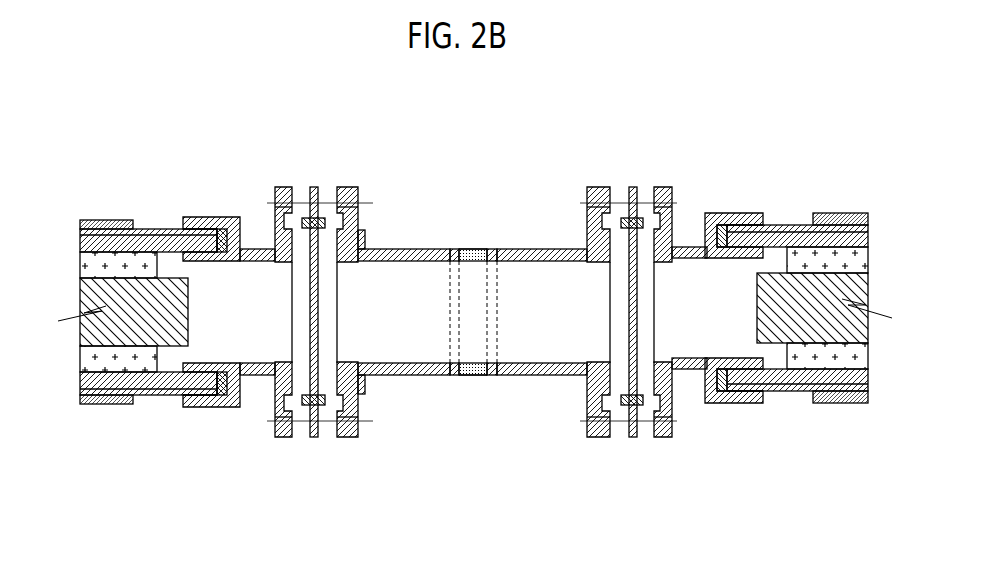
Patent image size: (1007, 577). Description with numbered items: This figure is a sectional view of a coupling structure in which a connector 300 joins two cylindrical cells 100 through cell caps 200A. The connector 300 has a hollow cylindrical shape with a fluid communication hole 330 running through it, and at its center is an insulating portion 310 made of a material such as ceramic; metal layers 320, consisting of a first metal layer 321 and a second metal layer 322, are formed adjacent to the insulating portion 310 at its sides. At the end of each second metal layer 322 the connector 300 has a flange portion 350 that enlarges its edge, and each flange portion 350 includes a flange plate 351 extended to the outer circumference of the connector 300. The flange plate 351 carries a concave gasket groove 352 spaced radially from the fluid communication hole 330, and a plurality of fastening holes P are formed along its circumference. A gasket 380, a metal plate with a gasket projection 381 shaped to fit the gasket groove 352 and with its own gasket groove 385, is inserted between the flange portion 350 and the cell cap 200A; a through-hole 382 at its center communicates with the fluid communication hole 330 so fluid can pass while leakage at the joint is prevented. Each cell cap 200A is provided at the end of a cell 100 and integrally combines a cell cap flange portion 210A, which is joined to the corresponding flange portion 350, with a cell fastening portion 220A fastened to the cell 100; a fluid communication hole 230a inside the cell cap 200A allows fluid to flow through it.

The cell 100 is at (104, 414).
The cell cap 200A is at (247, 214).
The cell fastening portion 220A is at (183, 217).
The fluid communication hole 230a is at (200, 408).
The through-hole 382 is at (258, 398).
The cell cap flange portion 210A is at (264, 425).
The flange portion 350 is at (463, 303).
The flange plate 351 is at (362, 231).
The gasket groove 352 is at (346, 208).
The gasket 380 is at (468, 256).
The gasket projection 381 is at (318, 215).
The gasket groove 385 is at (280, 206).
The fastening hole P is at (310, 206).
The connector 300 is at (472, 294).
The fluid communication hole 330 is at (412, 316).
The metal layer 320 is at (501, 324).
The first metal layer 321 is at (468, 250).
The second metal layer 322 is at (452, 250).
The insulating portion 310 is at (469, 376).